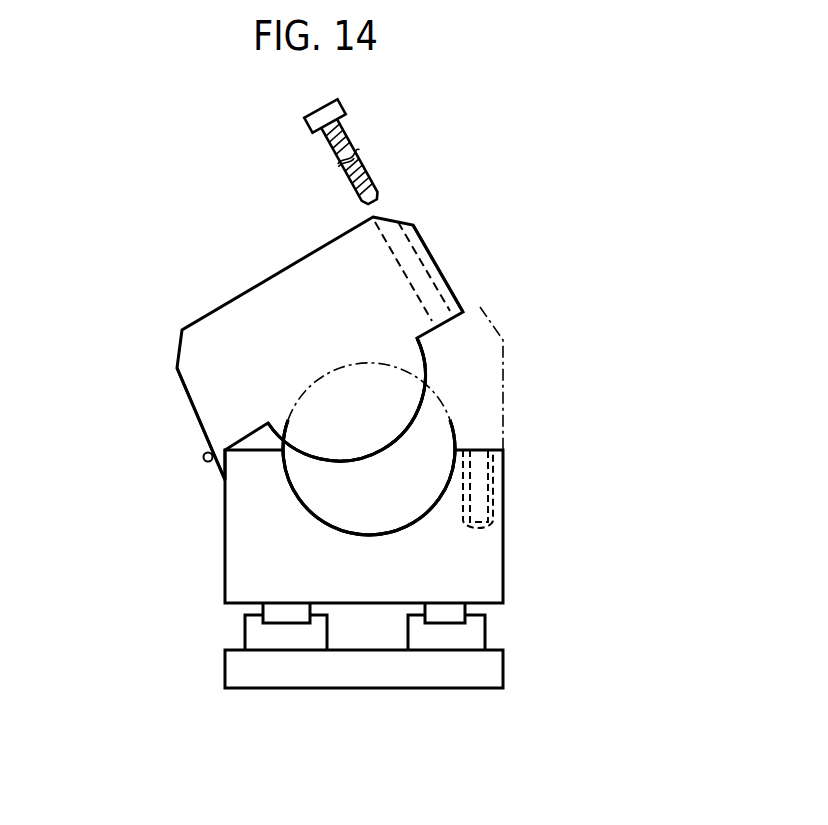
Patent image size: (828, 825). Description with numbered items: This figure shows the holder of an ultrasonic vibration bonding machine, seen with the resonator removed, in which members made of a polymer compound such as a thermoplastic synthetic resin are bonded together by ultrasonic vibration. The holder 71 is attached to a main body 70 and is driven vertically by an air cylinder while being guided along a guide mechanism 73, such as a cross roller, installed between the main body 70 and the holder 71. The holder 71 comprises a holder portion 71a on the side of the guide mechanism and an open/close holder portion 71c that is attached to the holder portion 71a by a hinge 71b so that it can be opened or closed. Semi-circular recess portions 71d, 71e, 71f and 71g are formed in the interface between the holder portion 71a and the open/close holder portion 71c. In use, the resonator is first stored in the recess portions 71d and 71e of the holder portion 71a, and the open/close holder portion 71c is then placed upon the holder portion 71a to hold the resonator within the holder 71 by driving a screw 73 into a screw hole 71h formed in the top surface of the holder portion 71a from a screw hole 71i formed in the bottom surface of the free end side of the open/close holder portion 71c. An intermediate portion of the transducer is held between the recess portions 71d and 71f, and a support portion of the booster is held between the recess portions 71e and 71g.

The main body 70 is at (503, 670).
The guide mechanism / screw 73 is at (366, 168).
The holder 71 is at (437, 268).
The holder portion on the side of the guide mechanism 71a is at (225, 543).
The hinge 71b is at (205, 462).
The open/close holder portion 71c is at (207, 412).
The recess portion 71d is at (319, 514).
The recess portion 71e is at (267, 543).
The recess portion 71f is at (289, 320).
The recess portion 71g is at (258, 312).
The screw hole 71h is at (492, 483).
The screw hole 71i is at (448, 285).